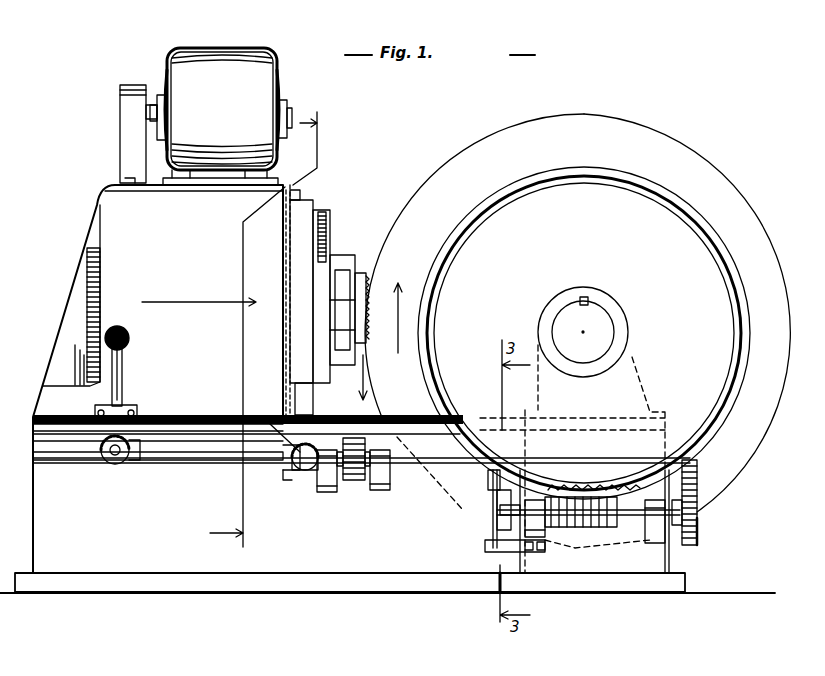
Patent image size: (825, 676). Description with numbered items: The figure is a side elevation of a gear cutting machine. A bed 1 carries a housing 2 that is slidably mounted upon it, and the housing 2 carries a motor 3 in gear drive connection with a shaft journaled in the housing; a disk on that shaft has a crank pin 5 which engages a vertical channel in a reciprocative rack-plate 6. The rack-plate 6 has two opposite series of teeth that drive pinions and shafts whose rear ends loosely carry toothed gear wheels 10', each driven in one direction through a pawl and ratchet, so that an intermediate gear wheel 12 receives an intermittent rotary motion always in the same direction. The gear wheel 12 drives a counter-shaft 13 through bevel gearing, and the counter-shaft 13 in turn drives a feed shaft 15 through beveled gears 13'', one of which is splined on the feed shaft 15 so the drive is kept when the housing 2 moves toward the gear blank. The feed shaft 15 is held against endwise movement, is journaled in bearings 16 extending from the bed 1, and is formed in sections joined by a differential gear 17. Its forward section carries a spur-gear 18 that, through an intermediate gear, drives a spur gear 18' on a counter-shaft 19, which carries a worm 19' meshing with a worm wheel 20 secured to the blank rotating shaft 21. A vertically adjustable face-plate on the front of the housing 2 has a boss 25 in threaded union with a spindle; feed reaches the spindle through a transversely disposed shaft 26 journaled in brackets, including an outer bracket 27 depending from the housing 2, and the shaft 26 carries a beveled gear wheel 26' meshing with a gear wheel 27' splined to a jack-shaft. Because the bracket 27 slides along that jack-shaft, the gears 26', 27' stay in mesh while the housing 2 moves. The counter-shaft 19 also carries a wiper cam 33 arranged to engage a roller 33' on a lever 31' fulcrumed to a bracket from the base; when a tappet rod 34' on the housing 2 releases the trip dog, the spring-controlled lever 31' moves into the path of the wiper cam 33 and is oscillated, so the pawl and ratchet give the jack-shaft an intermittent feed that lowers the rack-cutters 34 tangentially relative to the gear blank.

The bed 1 is at (387, 567).
The housing 2 is at (248, 379).
The motor 3 is at (206, 116).
The crank pin 5 is at (213, 371).
The rack-plate 6 is at (305, 139).
The toothed gear wheels 10' is at (59, 323).
The intermediate gear wheel 12 is at (87, 313).
The counter-shaft 13 is at (131, 373).
The beveled gears 13'' is at (102, 466).
The feed shaft 15 is at (222, 470).
The bearings 16 is at (320, 480).
The differential gear 17 is at (360, 440).
The spur-gear 18 is at (701, 502).
The spur gear 18' is at (719, 531).
The counter-shaft 19 is at (588, 514).
The worm 19' is at (597, 554).
The worm wheel 20 is at (604, 343).
The blank rotating shaft 21 is at (600, 330).
The boss 25 is at (315, 408).
The transversely disposed shaft 26 is at (277, 477).
The beveled gear wheel 26' is at (271, 493).
The outer bracket 27 is at (318, 451).
The gear wheel 27' is at (284, 473).
The lever 31' is at (497, 521).
The wiper cam 33 is at (486, 510).
The roller 33' is at (447, 493).
The rack-cutters 34 is at (378, 336).
The tappet rod 34' is at (474, 264).